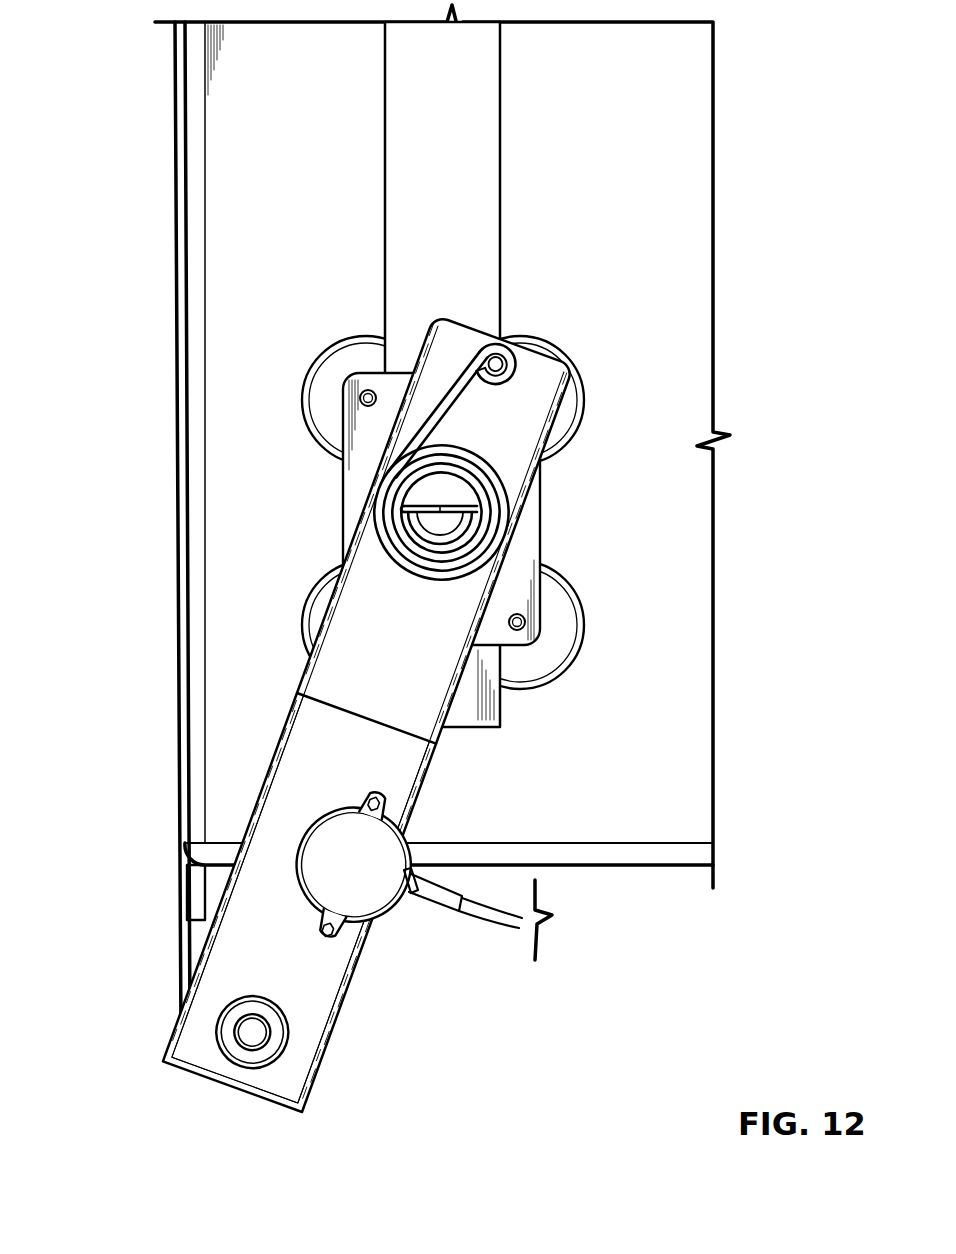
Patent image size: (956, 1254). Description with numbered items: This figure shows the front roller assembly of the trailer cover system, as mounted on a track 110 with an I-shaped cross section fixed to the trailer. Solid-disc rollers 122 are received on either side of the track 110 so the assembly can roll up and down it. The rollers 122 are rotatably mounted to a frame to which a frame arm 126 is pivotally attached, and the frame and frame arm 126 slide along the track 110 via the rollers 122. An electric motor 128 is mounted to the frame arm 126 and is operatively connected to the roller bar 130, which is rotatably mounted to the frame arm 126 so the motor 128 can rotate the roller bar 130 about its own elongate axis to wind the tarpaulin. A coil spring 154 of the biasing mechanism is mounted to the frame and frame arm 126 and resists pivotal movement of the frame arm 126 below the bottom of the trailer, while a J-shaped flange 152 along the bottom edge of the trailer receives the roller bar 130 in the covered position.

The track 110 is at (413, 170).
The roller 122 is at (312, 438).
The frame arm 126 is at (257, 943).
The electric motor 128 is at (383, 888).
The roller bar 130 is at (238, 1008).
The flange 152 is at (197, 895).
The coil spring 154 is at (507, 497).